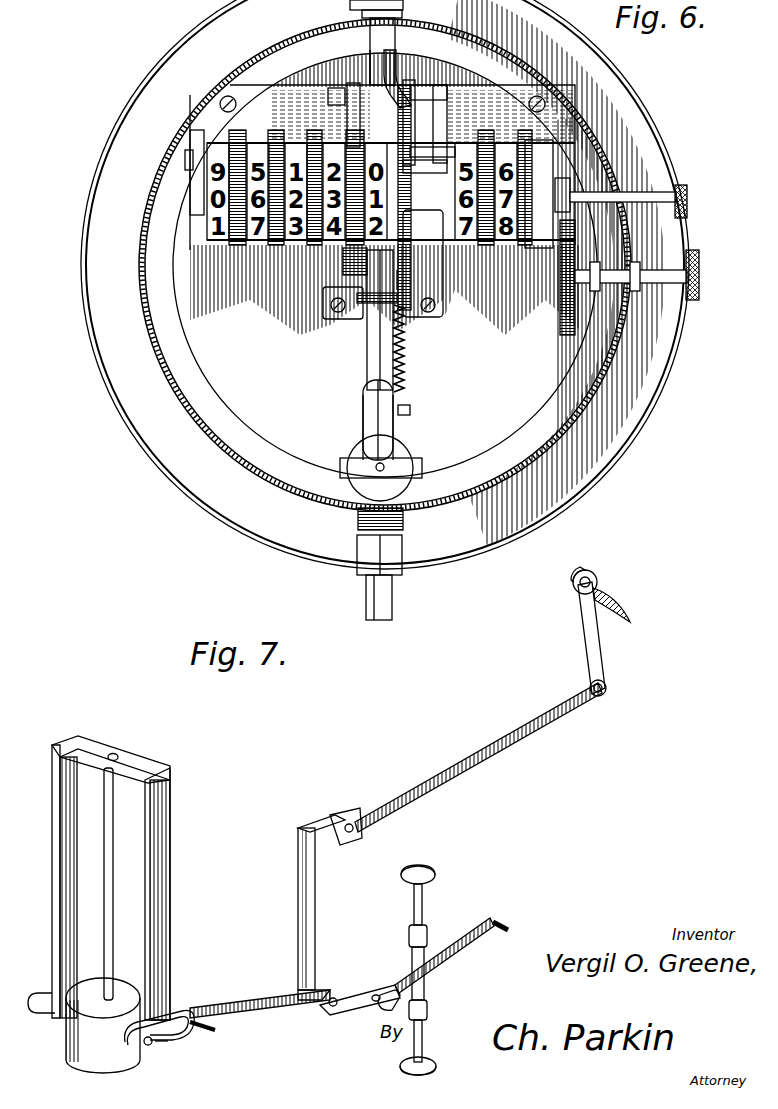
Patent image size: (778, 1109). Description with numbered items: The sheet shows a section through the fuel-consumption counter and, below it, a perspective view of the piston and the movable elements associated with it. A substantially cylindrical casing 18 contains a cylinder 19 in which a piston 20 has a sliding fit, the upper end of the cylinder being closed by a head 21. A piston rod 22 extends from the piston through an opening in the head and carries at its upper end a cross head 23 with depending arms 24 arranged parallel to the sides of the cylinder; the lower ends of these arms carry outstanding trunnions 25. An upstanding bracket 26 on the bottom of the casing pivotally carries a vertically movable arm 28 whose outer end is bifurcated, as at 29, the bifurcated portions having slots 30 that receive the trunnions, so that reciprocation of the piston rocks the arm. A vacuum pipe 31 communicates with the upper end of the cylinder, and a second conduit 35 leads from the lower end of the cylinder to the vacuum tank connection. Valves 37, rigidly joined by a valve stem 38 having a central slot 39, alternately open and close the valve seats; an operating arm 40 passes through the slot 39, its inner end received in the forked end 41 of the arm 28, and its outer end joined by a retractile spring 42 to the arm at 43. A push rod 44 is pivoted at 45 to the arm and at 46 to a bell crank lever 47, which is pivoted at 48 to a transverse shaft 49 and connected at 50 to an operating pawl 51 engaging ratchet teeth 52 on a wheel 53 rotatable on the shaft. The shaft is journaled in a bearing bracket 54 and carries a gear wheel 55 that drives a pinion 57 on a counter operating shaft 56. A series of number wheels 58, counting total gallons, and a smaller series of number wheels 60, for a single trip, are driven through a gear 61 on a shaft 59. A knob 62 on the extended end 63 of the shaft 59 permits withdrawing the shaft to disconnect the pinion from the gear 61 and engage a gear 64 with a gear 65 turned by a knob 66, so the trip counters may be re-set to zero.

In FIG. 6, the casing 18 is at (545, 86).
In FIG. 6, the cylinder 19 is at (395, 450).
In FIG. 7, the piston 20 is at (66, 1040).
In FIG. 6, the head 21 is at (400, 500).
In FIG. 6, the piston rod 22 is at (398, 476).
In FIG. 7, the piston rod 22 is at (107, 862).
In FIG. 6, the cross head 23 is at (353, 475).
In FIG. 7, the cross head 23 is at (148, 762).
In FIG. 7, the depending arms 24 is at (195, 880).
In FIG. 7, the trunnions 25 is at (150, 1045).
In FIG. 6, the upstanding bracket 26 is at (355, 275).
In FIG. 7, the vertically movable arm 28 is at (258, 1000).
In FIG. 7, the bifurcated portions 29 is at (178, 1010).
In FIG. 7, the slots 30 is at (170, 1042).
In FIG. 6, the vacuum pipe 31 is at (375, 378).
In FIG. 6, the second conduit 35 is at (392, 608).
In FIG. 7, the valves 37 is at (436, 1063).
In FIG. 7, the valve stem 38 is at (427, 920).
In FIG. 7, the slot 39 is at (428, 980).
In FIG. 7, the operating arm 40 is at (455, 940).
In FIG. 7, the forked end 41 is at (385, 1010).
In FIG. 6, the retractile spring 42 is at (400, 380).
In FIG. 6, the spring connection 43 is at (410, 410).
In FIG. 7, the spring connection 43 is at (218, 1030).
In FIG. 6, the push rod 44 is at (345, 320).
In FIG. 7, the push rod 44 is at (298, 920).
In FIG. 7, the pivotal connection 45 is at (328, 990).
In FIG. 6, the pivotal connection 46 is at (400, 297).
In FIG. 7, the pivotal connection 46 is at (355, 828).
In FIG. 6, the bell crank lever 47 is at (412, 280).
In FIG. 7, the bell crank lever 47 is at (440, 770).
In FIG. 7, the pivot 48 is at (606, 688).
In FIG. 6, the transverse shaft 49 is at (440, 88).
In FIG. 6, the pivotal connection 50 is at (415, 108).
In FIG. 7, the pivotal connection 50 is at (589, 578).
In FIG. 6, the operating pawl 51 is at (385, 110).
In FIG. 7, the operating pawl 51 is at (618, 602).
In FIG. 6, the ratchet teeth 52 is at (398, 35).
In FIG. 6, the ratchet wheel 53 is at (370, 62).
In FIG. 6, the bearing bracket 54 is at (328, 103).
In FIG. 6, the gear wheel 55 is at (398, 70).
In FIG. 6, the counter operating shaft 56 is at (455, 150).
In FIG. 6, the pinion 57 is at (410, 173).
In FIG. 6, the number wheels 58 is at (205, 150).
In FIG. 6, the shaft 59 is at (412, 215).
In FIG. 6, the smaller number wheels 60 is at (545, 140).
In FIG. 6, the gear 61 is at (412, 256).
In FIG. 6, the knob 62 is at (688, 200).
In FIG. 6, the extended end 63 is at (655, 192).
In FIG. 6, the gear 64 is at (572, 195).
In FIG. 6, the gear 65 is at (562, 335).
In FIG. 6, the knob 66 is at (700, 290).